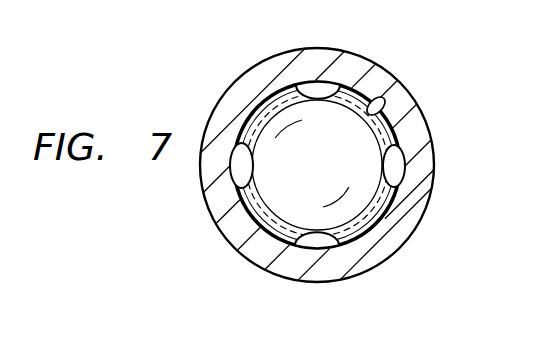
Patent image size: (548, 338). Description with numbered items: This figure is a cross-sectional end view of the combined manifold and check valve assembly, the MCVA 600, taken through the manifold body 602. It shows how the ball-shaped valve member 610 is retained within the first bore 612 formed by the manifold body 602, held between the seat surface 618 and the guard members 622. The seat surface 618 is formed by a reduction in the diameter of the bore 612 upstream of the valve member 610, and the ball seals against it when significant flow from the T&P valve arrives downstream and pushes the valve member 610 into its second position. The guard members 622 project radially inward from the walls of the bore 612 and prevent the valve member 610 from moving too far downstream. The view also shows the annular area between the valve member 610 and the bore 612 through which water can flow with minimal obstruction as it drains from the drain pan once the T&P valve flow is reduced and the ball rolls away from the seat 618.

The MCVA 600 is at (450, 60).
The manifold body 602 is at (428, 129).
The valve member 610 is at (216, 213).
The first bore 612 is at (384, 89).
The seat surface 618 is at (278, 88).
The guard members 622 is at (237, 124).